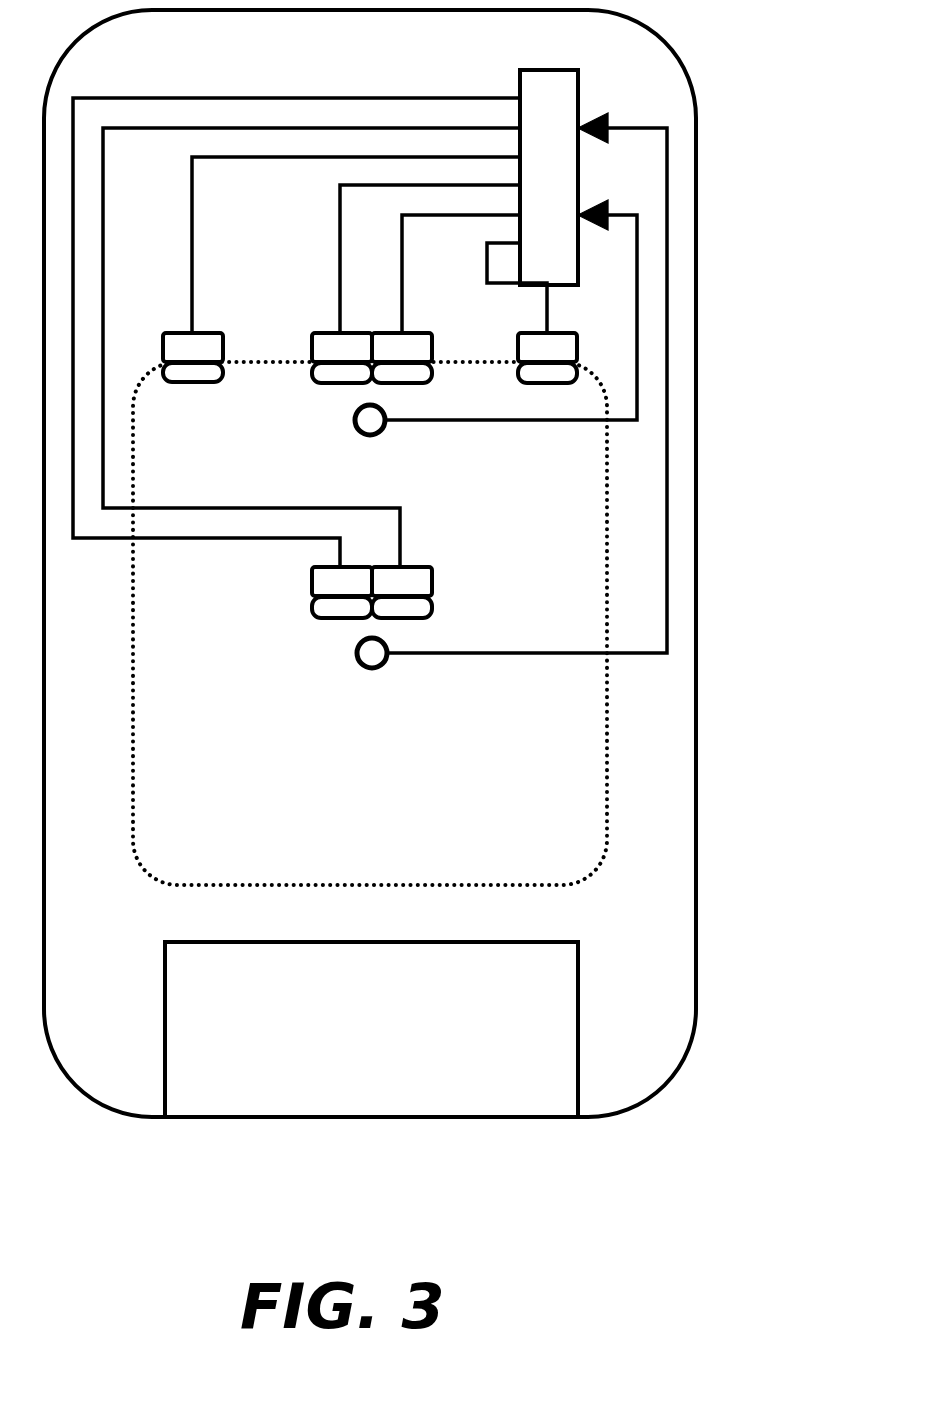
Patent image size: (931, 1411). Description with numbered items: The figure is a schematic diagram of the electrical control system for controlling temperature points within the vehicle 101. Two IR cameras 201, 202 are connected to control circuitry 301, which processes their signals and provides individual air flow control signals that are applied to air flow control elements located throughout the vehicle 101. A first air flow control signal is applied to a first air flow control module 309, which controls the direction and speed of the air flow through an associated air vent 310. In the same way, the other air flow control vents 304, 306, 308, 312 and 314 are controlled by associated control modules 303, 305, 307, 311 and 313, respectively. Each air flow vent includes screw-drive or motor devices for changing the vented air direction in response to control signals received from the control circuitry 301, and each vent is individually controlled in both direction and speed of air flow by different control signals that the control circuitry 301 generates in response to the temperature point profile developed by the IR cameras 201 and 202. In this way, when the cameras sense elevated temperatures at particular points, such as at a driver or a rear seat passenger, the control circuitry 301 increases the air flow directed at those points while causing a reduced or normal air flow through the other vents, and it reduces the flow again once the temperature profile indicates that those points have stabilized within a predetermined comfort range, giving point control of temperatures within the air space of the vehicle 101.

The vehicle 101 is at (696, 283).
The IR camera 201 is at (352, 420).
The IR camera 202 is at (360, 668).
The control circuitry 301 is at (520, 70).
The air flow control module 303 is at (577, 340).
The air flow control vent 304 is at (548, 385).
The air flow control module 305 is at (403, 333).
The air flow control vent 306 is at (428, 383).
The air flow control module 307 is at (338, 331).
The air flow control vent 308 is at (322, 383).
The first air flow control module 309 is at (168, 335).
The air vent 310 is at (185, 383).
The air flow control module 311 is at (312, 575).
The air flow control vent 312 is at (345, 622).
The air flow control module 313 is at (432, 580).
The air flow control vent 314 is at (428, 615).